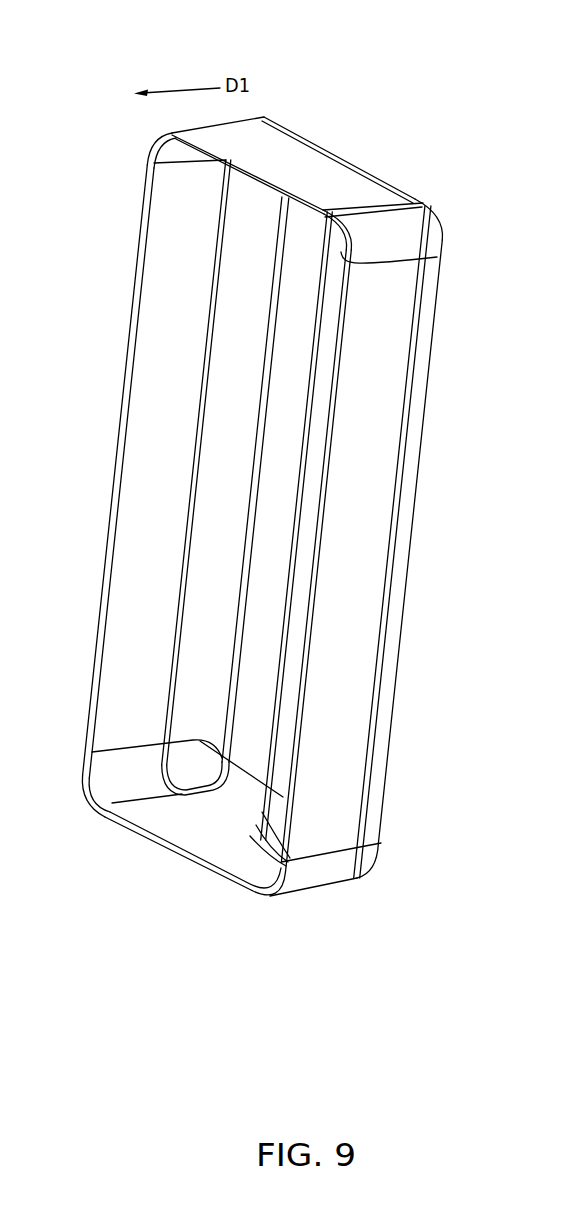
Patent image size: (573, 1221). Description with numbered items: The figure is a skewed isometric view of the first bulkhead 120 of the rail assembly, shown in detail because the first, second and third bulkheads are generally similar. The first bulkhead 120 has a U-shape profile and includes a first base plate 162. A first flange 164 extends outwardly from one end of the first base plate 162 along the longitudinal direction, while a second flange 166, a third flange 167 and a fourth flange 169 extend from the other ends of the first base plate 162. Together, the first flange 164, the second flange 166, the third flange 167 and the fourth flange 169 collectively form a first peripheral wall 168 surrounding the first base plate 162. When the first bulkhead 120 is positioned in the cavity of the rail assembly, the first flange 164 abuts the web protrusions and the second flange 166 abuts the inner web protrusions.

The first bulkhead 120 is at (282, 116).
The first base plate 162 is at (275, 507).
The first flange 164 is at (125, 377).
The second flange 166 is at (312, 626).
The third flange 167 is at (277, 165).
The first peripheral wall 168 is at (163, 302).
The fourth flange 169 is at (172, 848).